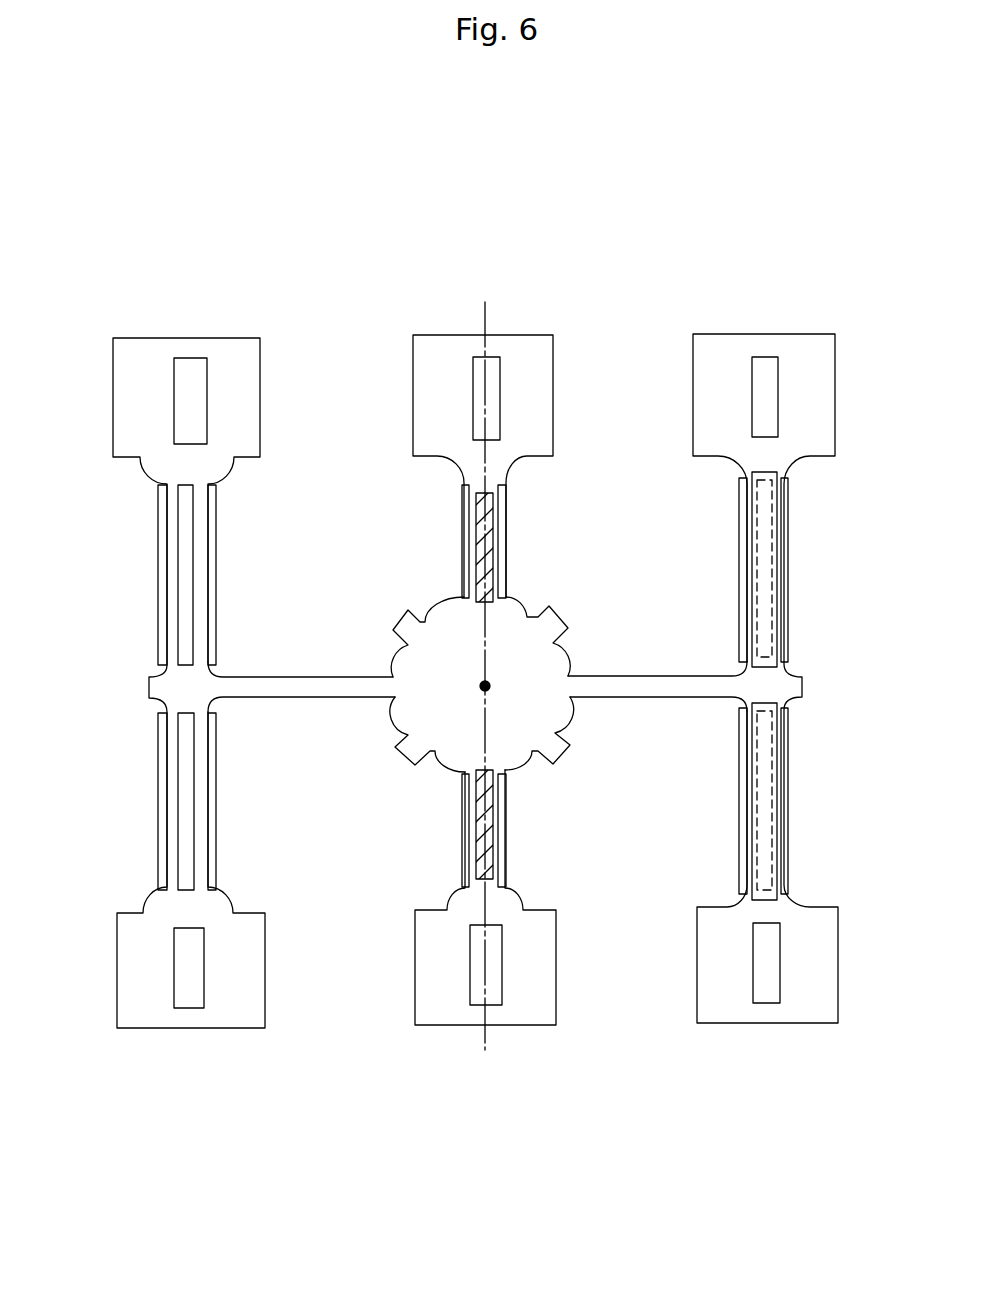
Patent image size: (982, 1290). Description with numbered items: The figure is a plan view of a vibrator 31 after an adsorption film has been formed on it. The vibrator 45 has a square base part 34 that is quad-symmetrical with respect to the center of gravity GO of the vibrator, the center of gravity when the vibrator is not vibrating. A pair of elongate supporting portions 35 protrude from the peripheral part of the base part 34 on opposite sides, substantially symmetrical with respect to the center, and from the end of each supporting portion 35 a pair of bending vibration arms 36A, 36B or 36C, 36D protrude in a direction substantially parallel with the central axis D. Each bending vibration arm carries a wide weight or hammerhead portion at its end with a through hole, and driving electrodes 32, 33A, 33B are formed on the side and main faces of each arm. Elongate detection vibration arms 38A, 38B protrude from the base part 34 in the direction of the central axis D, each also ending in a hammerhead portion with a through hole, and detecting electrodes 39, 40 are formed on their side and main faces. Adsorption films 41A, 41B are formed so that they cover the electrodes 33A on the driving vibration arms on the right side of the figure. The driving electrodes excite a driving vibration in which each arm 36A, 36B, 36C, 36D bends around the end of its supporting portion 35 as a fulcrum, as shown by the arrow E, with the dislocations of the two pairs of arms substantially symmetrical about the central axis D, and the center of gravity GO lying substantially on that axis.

The vibrator 31 is at (857, 338).
The vibrator 45 is at (830, 298).
The driving electrode 32 is at (160, 588).
The driving electrode 33A is at (772, 588).
The driving electrode 33B is at (193, 588).
The base part 34 is at (530, 628).
The supporting portion 35 is at (310, 684).
The bending vibration arm 36A is at (782, 498).
The bending vibration arm 36B is at (785, 725).
The bending vibration arm 36C is at (212, 747).
The bending vibration arm 36D is at (210, 497).
The detection vibration arm 38A is at (462, 507).
The detection vibration arm 38B is at (493, 832).
The detecting electrode 39 is at (494, 512).
The detecting electrode 40 is at (506, 548).
The adsorption film 41A is at (755, 574).
The adsorption film 41B is at (755, 815).
The center of gravity GO is at (487, 687).
The central axis D is at (483, 320).
The arrow E is at (232, 304).